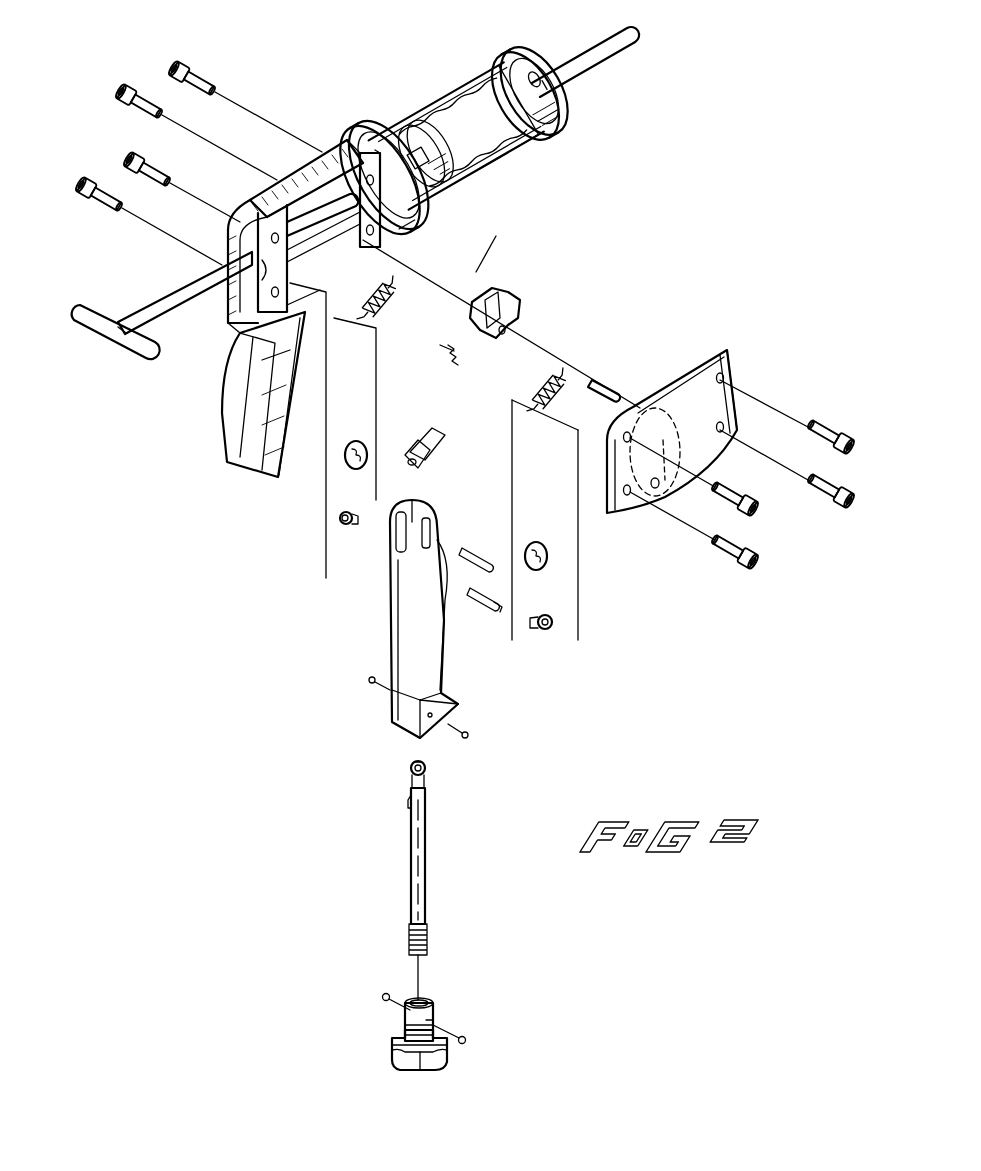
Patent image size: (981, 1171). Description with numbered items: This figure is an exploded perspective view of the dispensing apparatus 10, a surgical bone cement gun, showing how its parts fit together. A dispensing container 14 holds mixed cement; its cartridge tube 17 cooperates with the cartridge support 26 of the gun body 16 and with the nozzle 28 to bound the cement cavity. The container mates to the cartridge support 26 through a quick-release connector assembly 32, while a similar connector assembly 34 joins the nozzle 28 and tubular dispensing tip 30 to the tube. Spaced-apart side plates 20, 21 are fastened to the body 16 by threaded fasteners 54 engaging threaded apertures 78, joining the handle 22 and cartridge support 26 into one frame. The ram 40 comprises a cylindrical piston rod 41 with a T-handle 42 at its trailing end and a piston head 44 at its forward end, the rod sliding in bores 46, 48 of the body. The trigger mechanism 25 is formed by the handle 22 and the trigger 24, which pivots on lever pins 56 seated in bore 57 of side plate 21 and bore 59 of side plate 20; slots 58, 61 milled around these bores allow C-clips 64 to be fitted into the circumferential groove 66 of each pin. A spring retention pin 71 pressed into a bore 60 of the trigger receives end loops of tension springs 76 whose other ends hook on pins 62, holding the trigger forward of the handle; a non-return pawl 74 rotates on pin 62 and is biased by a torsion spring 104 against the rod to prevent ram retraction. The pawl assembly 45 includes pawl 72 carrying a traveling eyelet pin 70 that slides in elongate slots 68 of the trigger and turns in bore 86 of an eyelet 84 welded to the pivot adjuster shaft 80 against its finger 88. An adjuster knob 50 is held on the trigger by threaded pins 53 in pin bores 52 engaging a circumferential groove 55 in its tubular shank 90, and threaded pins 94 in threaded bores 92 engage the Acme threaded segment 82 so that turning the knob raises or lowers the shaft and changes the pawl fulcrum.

The dispensing apparatus 10 is at (70, 430).
The dispensing container 14 is at (435, 85).
The gun body 16 is at (236, 306).
The cartridge tube 17 is at (496, 166).
The side plate 20 is at (730, 352).
The side plate 21 is at (272, 192).
The handle 22 is at (225, 423).
The trigger 24 is at (443, 654).
The trigger mechanism 25 is at (527, 685).
The cartridge support 26 is at (420, 206).
The nozzle 28 is at (515, 52).
The tubular dispensing tip 30 is at (612, 64).
The connector assembly 32 is at (388, 111).
The connector assembly 34 is at (488, 54).
The ram 40 is at (157, 295).
The piston rod 41 is at (152, 332).
The T-handle 42 is at (105, 330).
The piston head 44 is at (450, 128).
The pawl assembly 45 is at (419, 415).
The slidable bore 46 is at (215, 270).
The slidable bore 48 is at (322, 168).
The adjuster knob 50 is at (420, 1070).
The threaded pin bore 52 is at (453, 703).
The threaded pin 53 is at (368, 680).
The threaded fastener 54 is at (122, 170).
The circumferential groove 55 is at (390, 1047).
The lever pin 56 is at (336, 518).
The bore 57 is at (313, 280).
The slot 58 is at (310, 249).
The bore 59 is at (658, 490).
The bore 60 is at (458, 550).
The slot 61 is at (666, 413).
The pin 62 is at (604, 395).
The C-clip 64 is at (356, 440).
The circumferential groove 66 is at (346, 522).
The elongate slot 68 is at (420, 507).
The traveling eyelet pin 70 is at (468, 595).
The spring retention pin 71 is at (497, 614).
The pawl 72 is at (437, 449).
The non-return pawl 74 is at (516, 288).
The tension spring 76 is at (383, 305).
The threaded aperture 78 is at (258, 228).
The pivot adjuster shaft 80 is at (428, 842).
The threaded segment 82 is at (438, 939).
The eyelet 84 is at (410, 771).
The bore 86 is at (416, 758).
The finger 88 is at (405, 788).
The tubular shank 90 is at (430, 994).
The threaded bore 92 is at (430, 1018).
The threaded pin 94 is at (383, 1000).
The torsion spring 104 is at (478, 337).